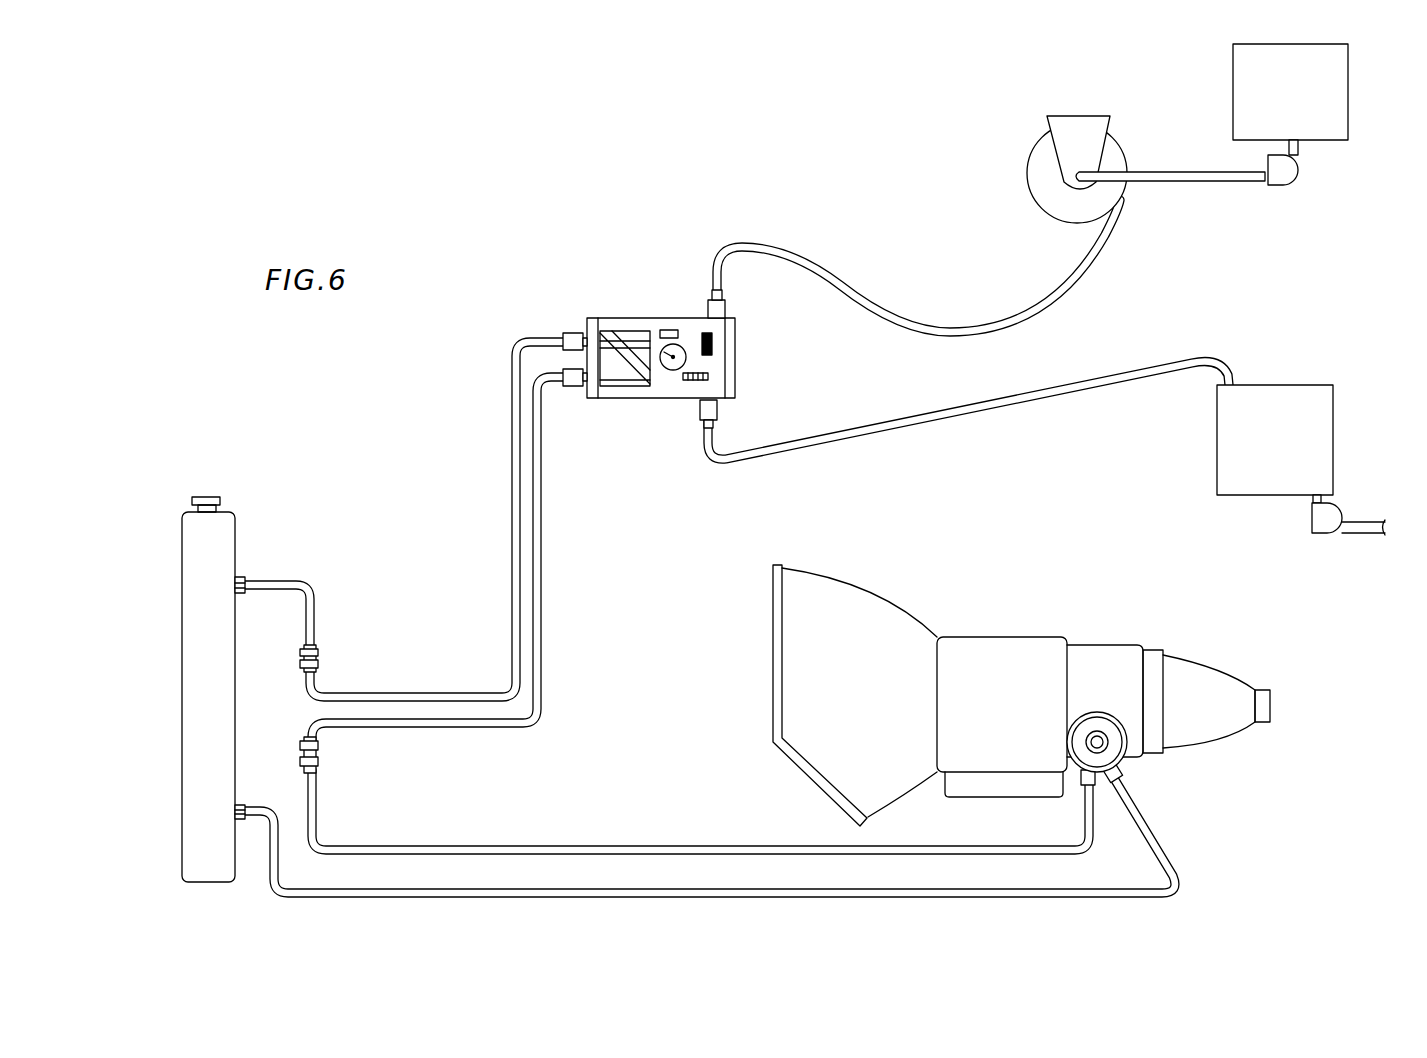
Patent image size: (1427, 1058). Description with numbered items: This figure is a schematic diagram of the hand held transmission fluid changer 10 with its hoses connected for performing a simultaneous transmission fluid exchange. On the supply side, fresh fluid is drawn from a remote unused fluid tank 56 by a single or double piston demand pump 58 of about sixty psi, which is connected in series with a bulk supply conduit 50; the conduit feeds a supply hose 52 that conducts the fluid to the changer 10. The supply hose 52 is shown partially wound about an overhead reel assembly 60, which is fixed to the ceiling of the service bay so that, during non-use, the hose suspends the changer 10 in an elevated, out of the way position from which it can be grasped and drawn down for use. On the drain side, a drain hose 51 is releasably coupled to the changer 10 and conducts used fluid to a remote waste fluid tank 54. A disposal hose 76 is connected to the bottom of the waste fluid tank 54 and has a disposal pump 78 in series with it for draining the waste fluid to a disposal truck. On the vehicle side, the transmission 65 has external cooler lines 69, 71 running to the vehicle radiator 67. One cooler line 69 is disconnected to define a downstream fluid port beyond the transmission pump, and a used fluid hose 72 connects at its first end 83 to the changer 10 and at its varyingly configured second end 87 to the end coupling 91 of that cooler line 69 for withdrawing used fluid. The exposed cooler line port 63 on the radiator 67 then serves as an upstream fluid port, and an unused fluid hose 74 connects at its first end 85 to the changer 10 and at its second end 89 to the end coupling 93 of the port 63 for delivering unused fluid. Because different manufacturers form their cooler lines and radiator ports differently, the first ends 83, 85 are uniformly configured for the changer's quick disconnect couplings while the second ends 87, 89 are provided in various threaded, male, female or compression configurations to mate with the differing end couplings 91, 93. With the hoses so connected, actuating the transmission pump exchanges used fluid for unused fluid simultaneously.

The hand held transmission fluid changer 10 is at (652, 403).
The bulk supply conduit 50 is at (1177, 182).
The drain hose 51 is at (958, 417).
The supply hose 52 is at (929, 322).
The waste fluid tank 54 is at (1311, 387).
The unused fluid tank 56 is at (1348, 125).
The demand pump 58 is at (1291, 181).
The overhead reel assembly 60 is at (1178, 132).
The cooler line port 63 is at (240, 576).
The spray gun 65 is at (1109, 645).
The vehicle radiator 67 is at (182, 771).
The transmission cooler line 69 is at (700, 842).
The return line 71 is at (786, 889).
The used fluid hose 72 is at (512, 567).
The unused fluid hose 74 is at (541, 571).
The disposal hose 76 is at (1358, 533).
The disposal pump 78 is at (1318, 534).
The first end 83 is at (561, 334).
The first end 85 is at (561, 387).
The second end 87 is at (322, 664).
The second end 89 is at (322, 746).
The end coupling 91 is at (322, 650).
The end coupling 93 is at (322, 765).